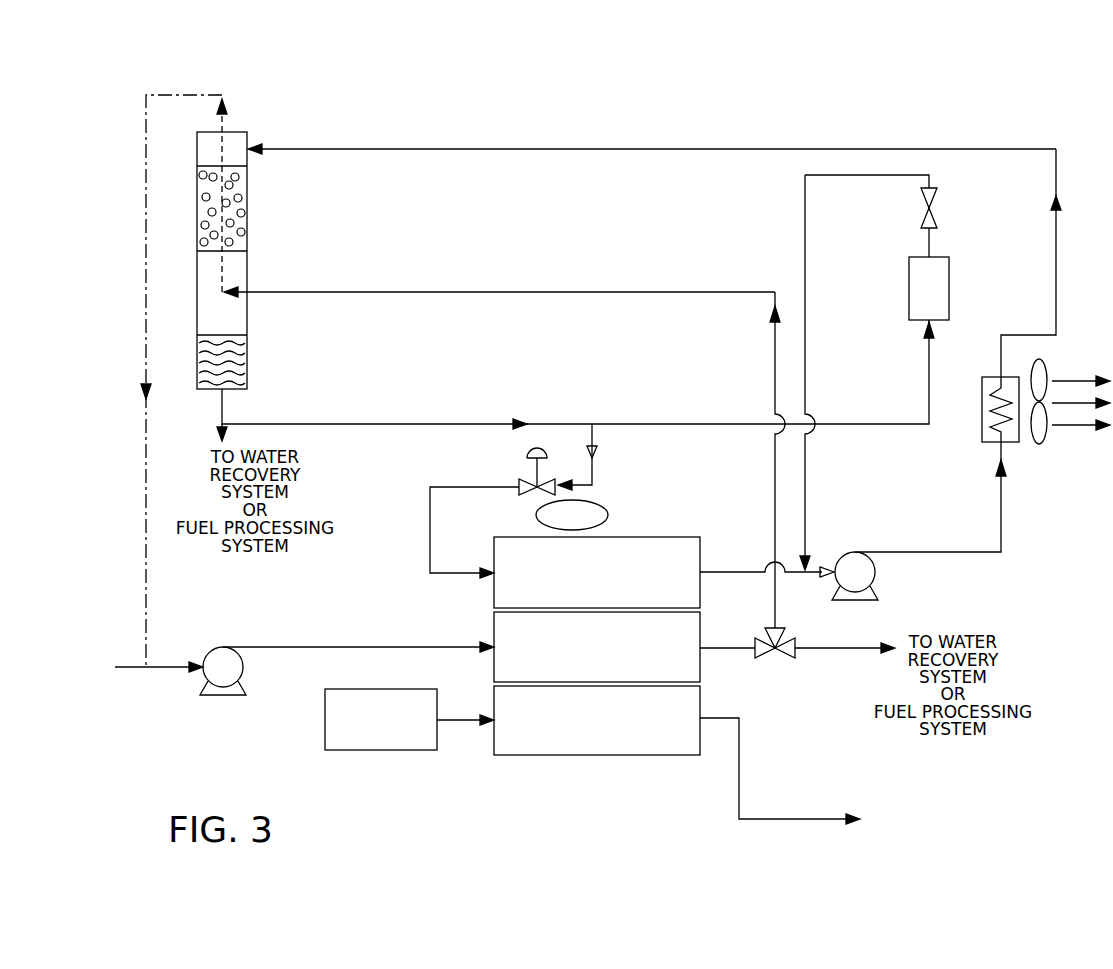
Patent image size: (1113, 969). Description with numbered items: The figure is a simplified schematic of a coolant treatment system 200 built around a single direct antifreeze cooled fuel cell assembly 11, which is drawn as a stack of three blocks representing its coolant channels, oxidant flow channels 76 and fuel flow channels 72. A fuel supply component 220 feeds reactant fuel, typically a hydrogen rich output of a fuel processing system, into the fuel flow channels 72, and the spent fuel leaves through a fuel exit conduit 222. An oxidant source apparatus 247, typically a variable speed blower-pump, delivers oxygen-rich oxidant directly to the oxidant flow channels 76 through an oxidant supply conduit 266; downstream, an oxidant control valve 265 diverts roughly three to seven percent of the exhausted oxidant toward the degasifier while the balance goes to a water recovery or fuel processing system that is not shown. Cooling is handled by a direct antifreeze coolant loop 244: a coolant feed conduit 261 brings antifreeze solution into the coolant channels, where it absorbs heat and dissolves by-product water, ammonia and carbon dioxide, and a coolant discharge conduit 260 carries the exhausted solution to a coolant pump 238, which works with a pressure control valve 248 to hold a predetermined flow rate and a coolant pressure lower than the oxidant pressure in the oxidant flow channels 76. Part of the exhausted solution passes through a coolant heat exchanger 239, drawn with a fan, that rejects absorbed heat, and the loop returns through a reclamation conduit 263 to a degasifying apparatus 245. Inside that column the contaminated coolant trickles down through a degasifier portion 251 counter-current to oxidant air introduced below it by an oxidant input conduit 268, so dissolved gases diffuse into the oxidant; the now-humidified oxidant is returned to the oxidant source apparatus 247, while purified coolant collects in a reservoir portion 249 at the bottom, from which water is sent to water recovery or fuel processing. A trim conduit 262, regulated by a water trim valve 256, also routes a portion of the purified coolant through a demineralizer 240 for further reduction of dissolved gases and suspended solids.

The coolant treatment system 200 is at (324, 52).
The fuel cell assembly 11 is at (600, 653).
The fuel flow channels 72 is at (510, 744).
The oxidant flow channels 76 is at (682, 613).
The fuel supply component 220 is at (378, 740).
The fuel exit conduit 222 is at (740, 743).
The coolant pump 238 is at (862, 570).
The coolant heat exchanger 239 is at (1016, 366).
The demineralizer 240 is at (916, 284).
The direct antifreeze coolant loop 244 is at (540, 518).
The degasifying apparatus 245 is at (182, 210).
The oxidant source apparatus 247 is at (294, 690).
The pressure control valve 248 is at (492, 477).
The reservoir portion 249 is at (240, 362).
The degasifier portion 251 is at (242, 186).
The water trim valve 256 is at (950, 208).
The coolant discharge conduit 260 is at (718, 572).
The coolant feed conduit 261 is at (430, 590).
The trim conduit 262 is at (835, 424).
The reclamation conduit 263 is at (352, 149).
The oxidant control valve 265 is at (777, 662).
The oxidant supply conduit 266 is at (312, 647).
The oxidant input conduit 268 is at (478, 292).